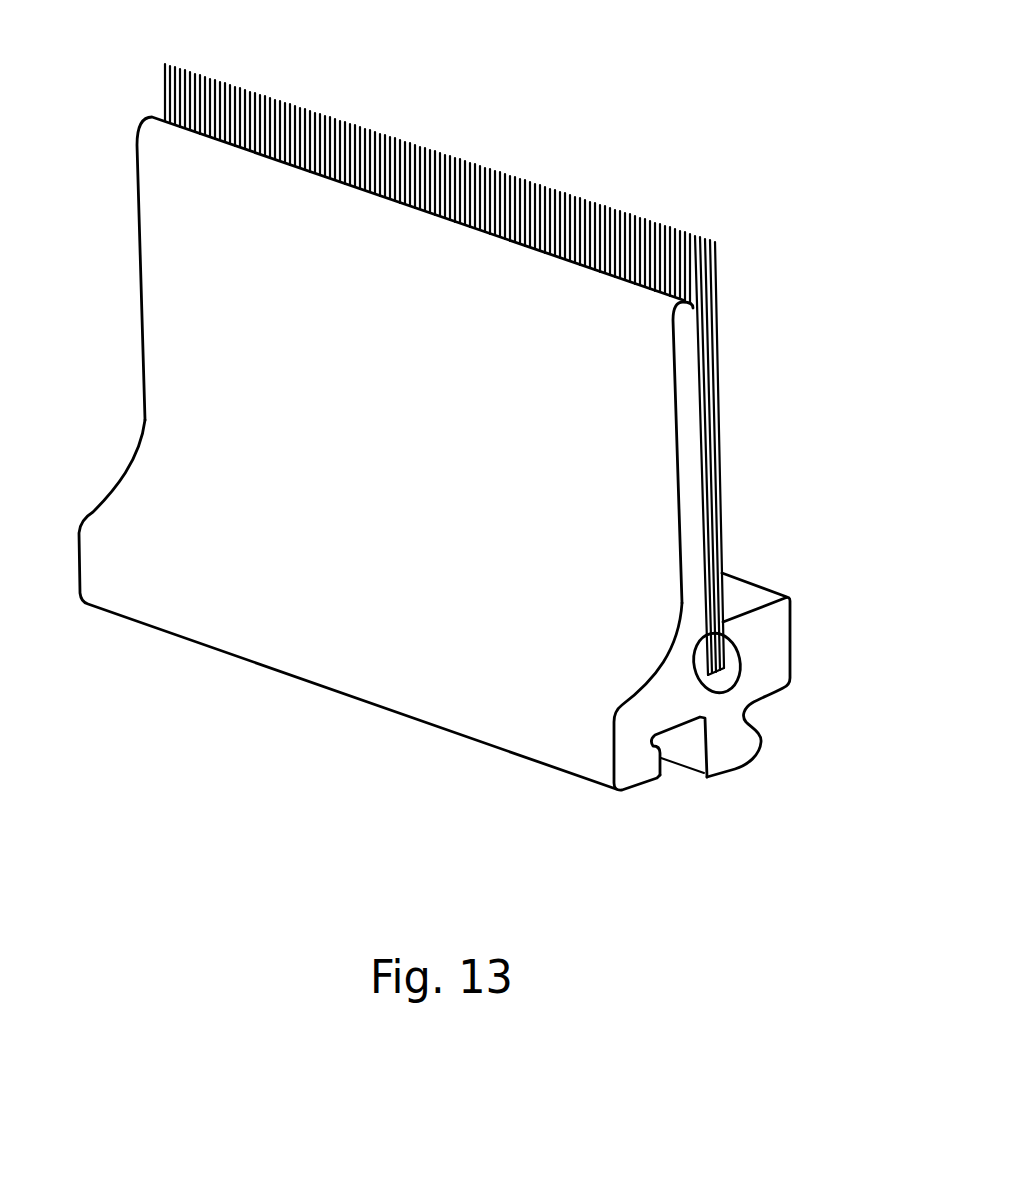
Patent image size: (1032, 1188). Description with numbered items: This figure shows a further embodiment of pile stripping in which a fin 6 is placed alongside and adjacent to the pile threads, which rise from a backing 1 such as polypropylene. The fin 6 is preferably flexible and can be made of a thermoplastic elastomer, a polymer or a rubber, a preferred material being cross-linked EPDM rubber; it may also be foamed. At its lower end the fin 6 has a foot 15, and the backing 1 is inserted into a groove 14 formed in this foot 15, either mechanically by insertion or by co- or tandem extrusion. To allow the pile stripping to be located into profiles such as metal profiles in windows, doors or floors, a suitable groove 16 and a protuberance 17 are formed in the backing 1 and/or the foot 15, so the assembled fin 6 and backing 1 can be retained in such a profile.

The fin 6 is at (195, 277).
The backing 1 is at (720, 680).
The groove 14 is at (740, 650).
The foot 15 is at (630, 732).
The groove 16 is at (677, 752).
The protuberance 17 is at (728, 745).